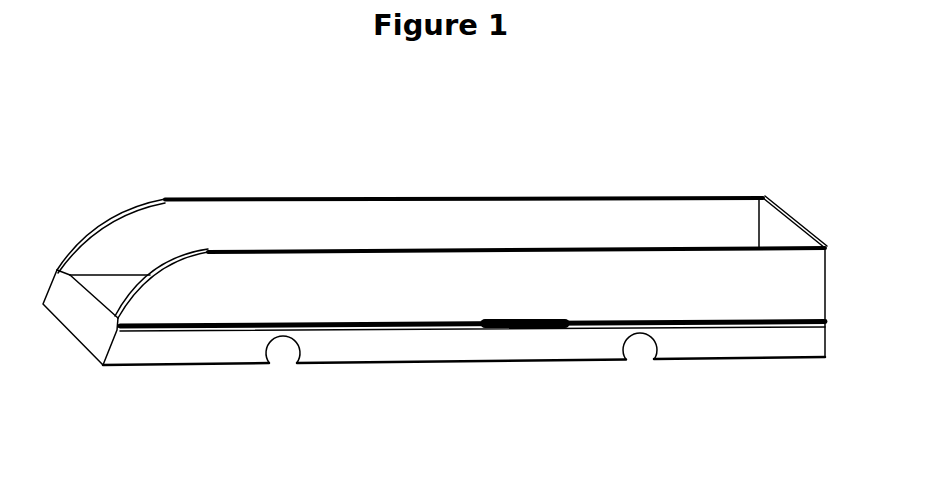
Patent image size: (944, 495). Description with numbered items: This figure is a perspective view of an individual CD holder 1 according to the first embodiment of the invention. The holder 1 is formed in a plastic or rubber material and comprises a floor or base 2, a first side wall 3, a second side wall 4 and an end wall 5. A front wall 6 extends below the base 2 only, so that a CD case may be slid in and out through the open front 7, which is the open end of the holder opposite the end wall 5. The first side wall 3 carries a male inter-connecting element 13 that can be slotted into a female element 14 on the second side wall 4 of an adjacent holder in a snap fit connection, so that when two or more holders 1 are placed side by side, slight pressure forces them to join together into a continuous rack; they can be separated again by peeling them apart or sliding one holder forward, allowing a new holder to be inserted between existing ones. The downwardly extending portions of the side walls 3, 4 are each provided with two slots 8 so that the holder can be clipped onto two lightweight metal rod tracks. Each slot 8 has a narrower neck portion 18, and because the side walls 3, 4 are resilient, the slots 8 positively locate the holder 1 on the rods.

The individual CD holder 1 is at (448, 156).
The base 2 is at (122, 282).
The first side wall 3 is at (690, 217).
The second side wall 4 is at (750, 305).
The end wall 5 is at (776, 240).
The front wall 6 is at (80, 293).
The open front 7 is at (92, 272).
The slots 8 is at (461, 398).
The male inter-connecting element 13 is at (55, 272).
The female element 14 is at (708, 323).
The neck portion 18 is at (647, 357).